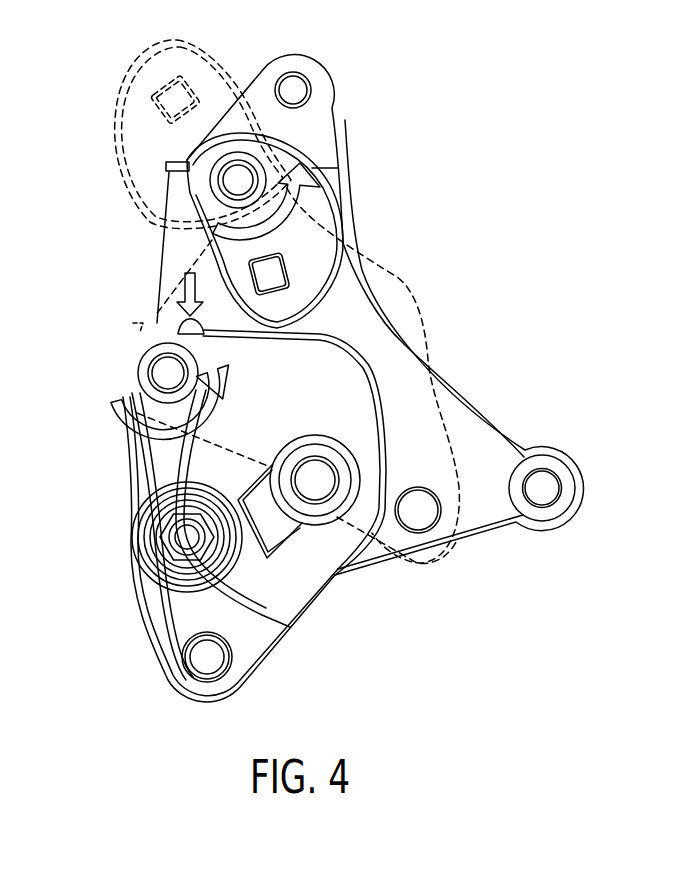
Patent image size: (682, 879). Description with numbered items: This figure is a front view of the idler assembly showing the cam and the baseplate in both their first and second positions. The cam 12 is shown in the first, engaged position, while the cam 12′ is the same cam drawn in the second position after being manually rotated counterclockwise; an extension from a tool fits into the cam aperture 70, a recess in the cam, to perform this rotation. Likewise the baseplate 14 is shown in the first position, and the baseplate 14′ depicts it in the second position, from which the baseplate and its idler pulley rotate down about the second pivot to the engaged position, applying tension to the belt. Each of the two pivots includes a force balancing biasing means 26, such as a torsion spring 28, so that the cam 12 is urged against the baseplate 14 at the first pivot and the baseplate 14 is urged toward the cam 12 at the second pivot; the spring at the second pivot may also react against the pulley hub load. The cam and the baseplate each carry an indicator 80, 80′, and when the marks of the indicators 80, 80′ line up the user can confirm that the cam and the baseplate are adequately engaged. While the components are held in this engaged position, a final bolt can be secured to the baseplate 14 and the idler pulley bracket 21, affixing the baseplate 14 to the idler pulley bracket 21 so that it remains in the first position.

The cam 12′ is at (215, 57).
The cam aperture 70 is at (112, 120).
The force balancing biasing means 26 is at (210, 174).
The torsion spring 28 is at (146, 397).
The cam 12 is at (200, 246).
The indicator 80 is at (180, 295).
The indicator 80′ is at (177, 329).
The baseplate 14′ is at (432, 368).
The idler pulley bracket 21 is at (480, 448).
The baseplate 14 is at (267, 631).